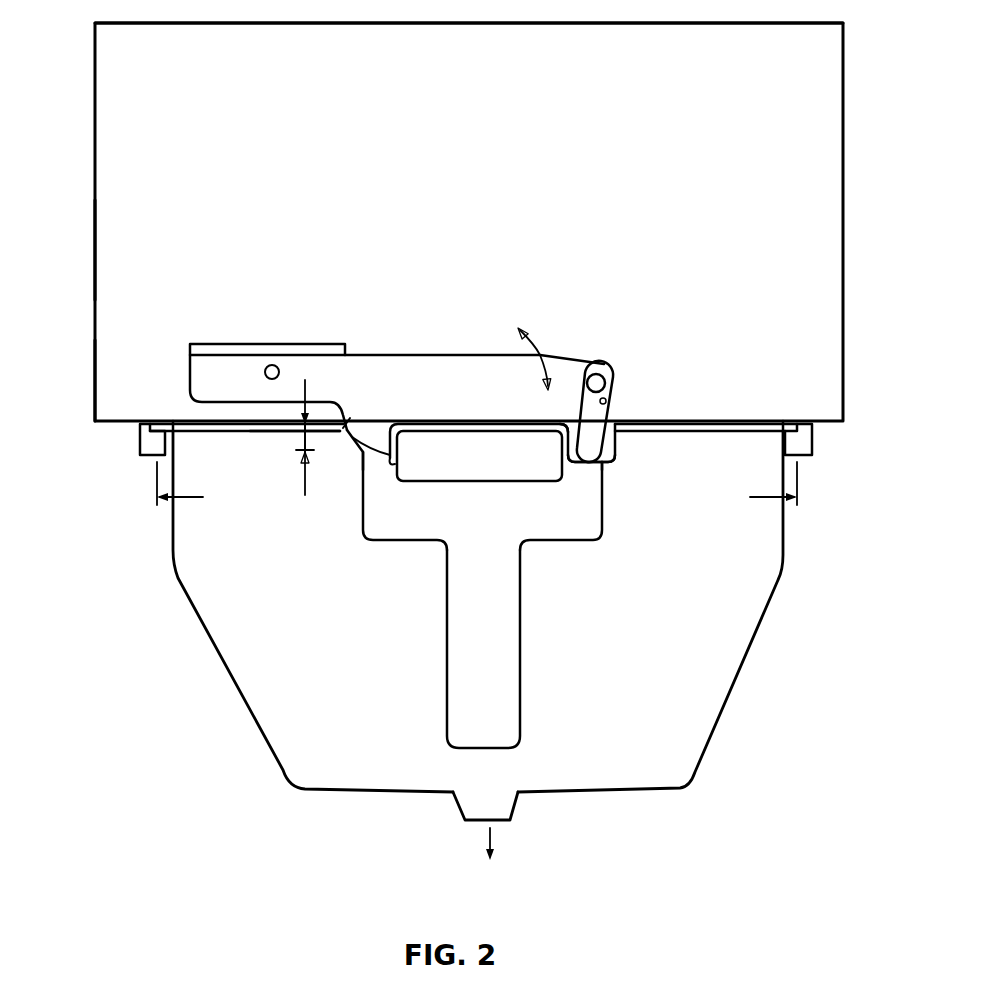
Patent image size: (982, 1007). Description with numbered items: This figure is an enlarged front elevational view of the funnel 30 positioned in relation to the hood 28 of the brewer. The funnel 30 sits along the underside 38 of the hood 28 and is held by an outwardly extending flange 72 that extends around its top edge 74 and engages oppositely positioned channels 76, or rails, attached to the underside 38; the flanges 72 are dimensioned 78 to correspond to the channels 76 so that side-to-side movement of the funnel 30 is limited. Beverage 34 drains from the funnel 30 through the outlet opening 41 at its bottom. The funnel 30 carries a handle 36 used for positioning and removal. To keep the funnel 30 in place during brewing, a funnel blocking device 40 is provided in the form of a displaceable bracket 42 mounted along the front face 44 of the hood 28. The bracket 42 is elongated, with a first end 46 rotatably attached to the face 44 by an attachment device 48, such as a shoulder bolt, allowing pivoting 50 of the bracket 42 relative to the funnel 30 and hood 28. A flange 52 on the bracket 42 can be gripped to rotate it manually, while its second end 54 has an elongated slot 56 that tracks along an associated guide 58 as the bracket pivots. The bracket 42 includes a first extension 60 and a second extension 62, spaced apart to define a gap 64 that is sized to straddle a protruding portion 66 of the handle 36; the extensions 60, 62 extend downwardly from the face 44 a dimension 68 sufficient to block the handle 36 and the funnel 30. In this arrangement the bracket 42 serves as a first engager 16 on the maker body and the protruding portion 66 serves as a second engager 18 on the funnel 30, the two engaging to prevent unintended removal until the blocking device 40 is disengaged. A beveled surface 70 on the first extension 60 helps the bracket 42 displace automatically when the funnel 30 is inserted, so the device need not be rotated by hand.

The first engager 16 is at (427, 340).
The second engager 18 is at (434, 498).
The hood 28 is at (90, 136).
The funnel 30 is at (214, 653).
The beverage 34 is at (489, 839).
The handle 36 is at (447, 648).
The underside of the hood 38 is at (282, 433).
The funnel blocking device 40 is at (386, 243).
The outlet opening 41 is at (462, 808).
The displaceable bracket 42 is at (560, 312).
The front face 44 is at (104, 70).
The first end 46 is at (167, 330).
The attachment device 48 is at (275, 365).
The pivoting 50 is at (540, 352).
The flange 52 is at (218, 348).
The second end 54 is at (620, 476).
The elongated slot 56 is at (607, 401).
The guide 58 is at (605, 371).
The first extension 60 is at (343, 430).
The second extension 62 is at (612, 458).
The gap 64 is at (560, 435).
The protruding portion 66 is at (395, 464).
The dimension 68 is at (303, 444).
The beveled surface 70 is at (363, 455).
The outwardly extending flange 72 is at (140, 423).
The top edge 74 is at (172, 422).
The channels 76 is at (140, 438).
The dimension 78 is at (182, 498).